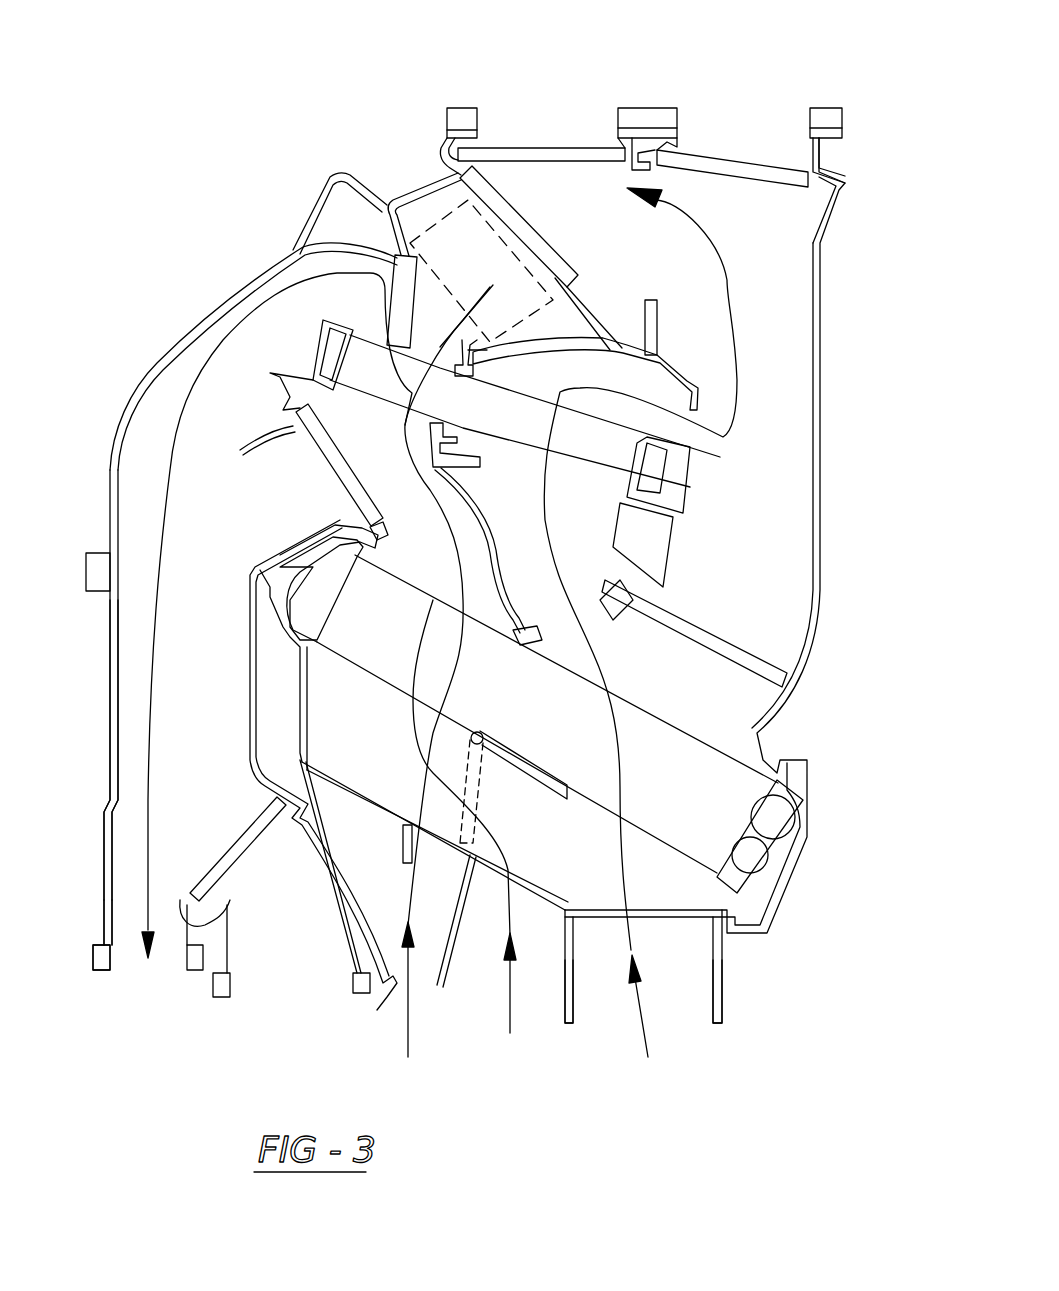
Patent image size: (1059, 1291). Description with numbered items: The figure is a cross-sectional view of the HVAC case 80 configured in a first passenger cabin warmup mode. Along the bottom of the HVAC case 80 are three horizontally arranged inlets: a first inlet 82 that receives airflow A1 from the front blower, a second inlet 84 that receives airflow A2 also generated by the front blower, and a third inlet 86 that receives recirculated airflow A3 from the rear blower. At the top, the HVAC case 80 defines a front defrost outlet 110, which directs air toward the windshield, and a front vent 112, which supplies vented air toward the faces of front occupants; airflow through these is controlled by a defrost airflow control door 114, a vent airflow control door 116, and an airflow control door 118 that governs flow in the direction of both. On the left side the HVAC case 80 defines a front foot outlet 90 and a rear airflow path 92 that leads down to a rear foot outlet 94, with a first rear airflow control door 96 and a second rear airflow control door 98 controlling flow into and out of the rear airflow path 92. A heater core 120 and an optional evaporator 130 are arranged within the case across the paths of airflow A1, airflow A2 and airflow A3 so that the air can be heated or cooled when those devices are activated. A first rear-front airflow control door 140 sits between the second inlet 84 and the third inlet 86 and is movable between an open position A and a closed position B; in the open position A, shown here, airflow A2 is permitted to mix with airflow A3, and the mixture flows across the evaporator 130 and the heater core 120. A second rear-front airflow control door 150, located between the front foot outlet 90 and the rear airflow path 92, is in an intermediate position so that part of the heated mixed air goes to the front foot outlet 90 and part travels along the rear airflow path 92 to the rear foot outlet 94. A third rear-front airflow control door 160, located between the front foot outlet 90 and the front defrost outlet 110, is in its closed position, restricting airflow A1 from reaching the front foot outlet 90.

The HVAC case 80 is at (167, 311).
The first inlet 82 is at (713, 997).
The second inlet 84 is at (565, 985).
The third inlet 86 is at (377, 975).
The front foot outlet 90 is at (437, 220).
The rear airflow path 92 is at (113, 687).
The rear foot outlet 94 is at (110, 933).
The first rear airflow control door 96 is at (333, 453).
The second rear airflow control door 98 is at (240, 855).
The front defrost outlet 110 is at (618, 143).
The front vent 112 is at (810, 137).
The defrost airflow control door 114 is at (543, 147).
The vent airflow control door 116 is at (738, 153).
The airflow control door 118 is at (735, 632).
The heater core 120 is at (615, 442).
The evaporator 130 is at (680, 787).
The first rear-front airflow control door 140 is at (517, 767).
The second rear-front airflow control door 150 is at (410, 270).
The third rear-front airflow control door 160 is at (533, 228).
The open position A is at (567, 790).
The closed position B is at (457, 817).
The airflow A1 is at (643, 1033).
The airflow A2 is at (510, 993).
The airflow A3 is at (407, 1013).